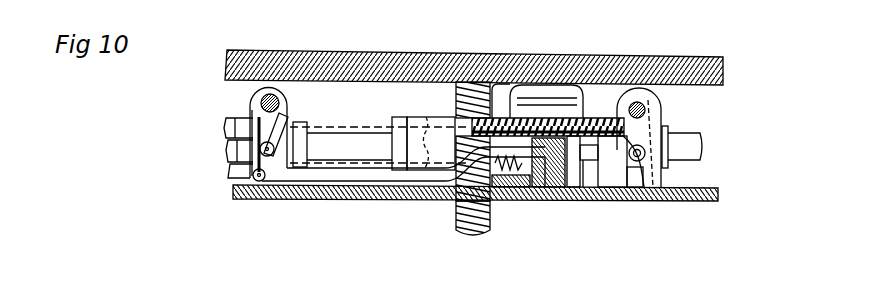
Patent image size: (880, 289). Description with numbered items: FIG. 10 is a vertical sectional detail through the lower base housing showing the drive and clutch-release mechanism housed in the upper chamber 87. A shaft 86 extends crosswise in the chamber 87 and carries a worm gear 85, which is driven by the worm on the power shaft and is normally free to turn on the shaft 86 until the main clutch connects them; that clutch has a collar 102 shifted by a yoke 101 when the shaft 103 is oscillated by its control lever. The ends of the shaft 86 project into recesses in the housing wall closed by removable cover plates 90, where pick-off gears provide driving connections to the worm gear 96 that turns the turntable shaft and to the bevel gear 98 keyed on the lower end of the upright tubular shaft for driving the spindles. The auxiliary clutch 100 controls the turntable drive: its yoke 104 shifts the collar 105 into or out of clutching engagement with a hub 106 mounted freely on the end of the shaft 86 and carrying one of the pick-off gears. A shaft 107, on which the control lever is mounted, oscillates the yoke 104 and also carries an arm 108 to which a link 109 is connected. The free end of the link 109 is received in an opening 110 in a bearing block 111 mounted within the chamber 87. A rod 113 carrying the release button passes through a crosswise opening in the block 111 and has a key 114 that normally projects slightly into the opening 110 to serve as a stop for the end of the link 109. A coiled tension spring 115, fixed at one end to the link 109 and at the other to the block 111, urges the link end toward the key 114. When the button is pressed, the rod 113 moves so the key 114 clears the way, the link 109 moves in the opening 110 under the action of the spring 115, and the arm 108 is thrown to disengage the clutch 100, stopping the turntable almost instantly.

The worm gear 85 is at (490, 233).
The shaft 86 is at (688, 146).
The upper chamber 87 is at (592, 0).
The removable cover plate 90 is at (578, 190).
The worm gear 96 is at (347, 128).
The bevel gear 98 is at (560, 119).
The auxiliary clutch 100 is at (247, 103).
The yoke 101 is at (629, 157).
The collar 102 is at (646, 196).
The shaft 103 is at (646, 108).
The yoke 104 is at (286, 121).
The collar 105 is at (228, 124).
The hub 106 is at (241, 170).
The shaft 107 is at (280, 104).
The arm 108 is at (242, 144).
The link 109 is at (347, 177).
The opening 110 is at (577, 119).
The bearing block 111 is at (540, 188).
The rod 113 is at (563, 190).
The key 114 is at (592, 152).
The coiled tension spring 115 is at (511, 171).